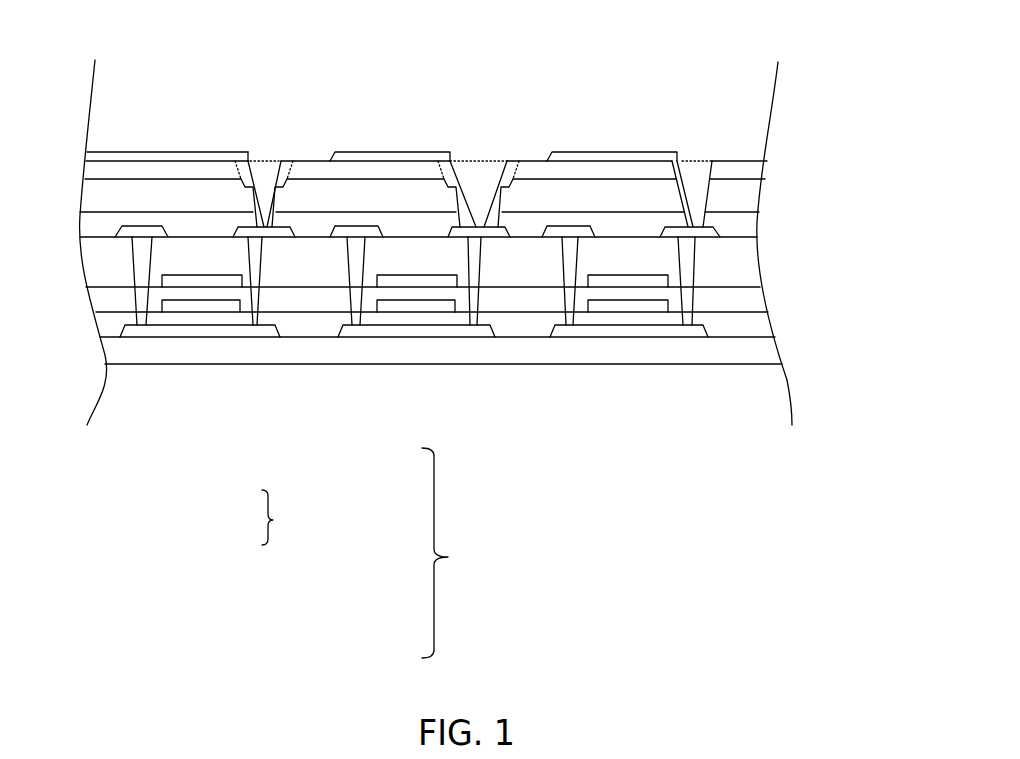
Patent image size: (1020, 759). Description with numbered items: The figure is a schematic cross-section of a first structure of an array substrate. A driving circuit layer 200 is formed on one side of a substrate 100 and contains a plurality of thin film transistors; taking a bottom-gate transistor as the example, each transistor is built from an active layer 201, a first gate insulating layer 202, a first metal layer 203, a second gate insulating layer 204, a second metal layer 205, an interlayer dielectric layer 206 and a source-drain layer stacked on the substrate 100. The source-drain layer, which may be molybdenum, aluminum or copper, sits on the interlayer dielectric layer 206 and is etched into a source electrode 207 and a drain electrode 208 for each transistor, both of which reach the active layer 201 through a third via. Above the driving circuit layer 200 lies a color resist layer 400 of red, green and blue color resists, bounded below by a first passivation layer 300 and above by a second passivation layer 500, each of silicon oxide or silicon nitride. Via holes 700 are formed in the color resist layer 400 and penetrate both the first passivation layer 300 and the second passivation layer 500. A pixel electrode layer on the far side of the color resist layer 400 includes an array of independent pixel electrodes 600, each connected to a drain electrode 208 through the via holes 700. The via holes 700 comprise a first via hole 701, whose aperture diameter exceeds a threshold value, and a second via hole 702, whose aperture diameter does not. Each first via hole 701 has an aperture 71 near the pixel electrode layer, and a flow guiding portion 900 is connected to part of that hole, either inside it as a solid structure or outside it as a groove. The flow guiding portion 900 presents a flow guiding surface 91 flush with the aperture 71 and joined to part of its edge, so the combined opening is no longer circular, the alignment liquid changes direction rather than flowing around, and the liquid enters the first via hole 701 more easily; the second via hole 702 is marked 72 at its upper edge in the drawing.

The substrate 100 is at (775, 363).
The driving circuit layer 200 is at (459, 553).
The active layer 201 is at (697, 330).
The first gate insulating layer 202 is at (765, 335).
The first metal layer 203 is at (595, 308).
The second gate insulating layer 204 is at (753, 312).
The second metal layer 205 is at (638, 282).
The interlayer dielectric layer 206 is at (748, 272).
The source electrode 207 is at (583, 226).
The drain electrode 208 is at (668, 227).
The first passivation layer 300 is at (748, 232).
The color resist layer 400 is at (748, 201).
The second passivation layer 500 is at (748, 173).
The pixel electrode 600 is at (150, 157).
The via hole 700 is at (292, 517).
The first via hole 701 is at (267, 203).
The second via hole 702 is at (690, 176).
The connection layer 72 is at (712, 161).
The aperture 71 is at (293, 161).
The flow guiding surface 91 is at (247, 161).
The flow guiding portion 900 is at (244, 183).